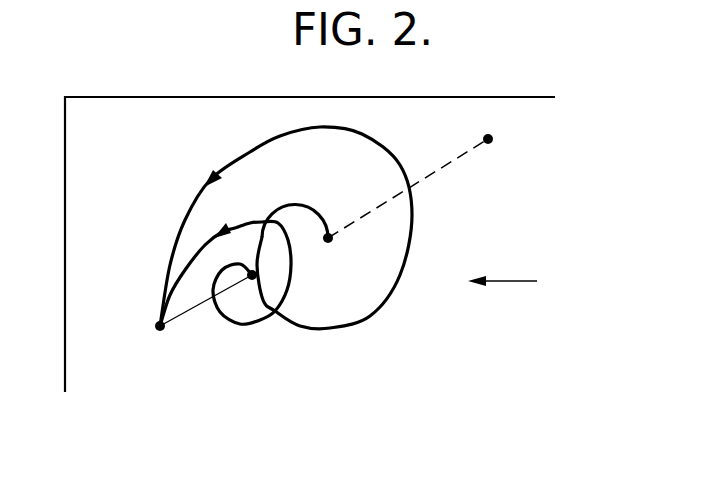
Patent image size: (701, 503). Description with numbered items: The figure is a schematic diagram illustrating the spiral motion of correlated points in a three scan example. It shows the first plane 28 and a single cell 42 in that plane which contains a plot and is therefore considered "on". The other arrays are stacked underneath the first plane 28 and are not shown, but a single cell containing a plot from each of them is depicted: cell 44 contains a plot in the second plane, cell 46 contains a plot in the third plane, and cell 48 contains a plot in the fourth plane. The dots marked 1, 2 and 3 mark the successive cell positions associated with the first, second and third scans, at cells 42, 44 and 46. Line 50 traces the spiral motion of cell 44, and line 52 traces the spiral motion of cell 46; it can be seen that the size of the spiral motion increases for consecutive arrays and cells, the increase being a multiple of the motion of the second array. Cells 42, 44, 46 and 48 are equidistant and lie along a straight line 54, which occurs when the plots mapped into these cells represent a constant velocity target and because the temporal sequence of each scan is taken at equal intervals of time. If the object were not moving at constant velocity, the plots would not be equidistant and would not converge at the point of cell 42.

The first scan point 1 is at (163, 339).
The second scan point 2 is at (251, 291).
The third scan point 3 is at (330, 253).
The first plane 28 is at (518, 281).
The cell 42 is at (140, 305).
The cell 44 is at (286, 291).
The cell 46 is at (361, 253).
The cell 48 is at (490, 136).
The line 50 is at (235, 225).
The line 52 is at (363, 136).
The straight line 54 is at (432, 177).